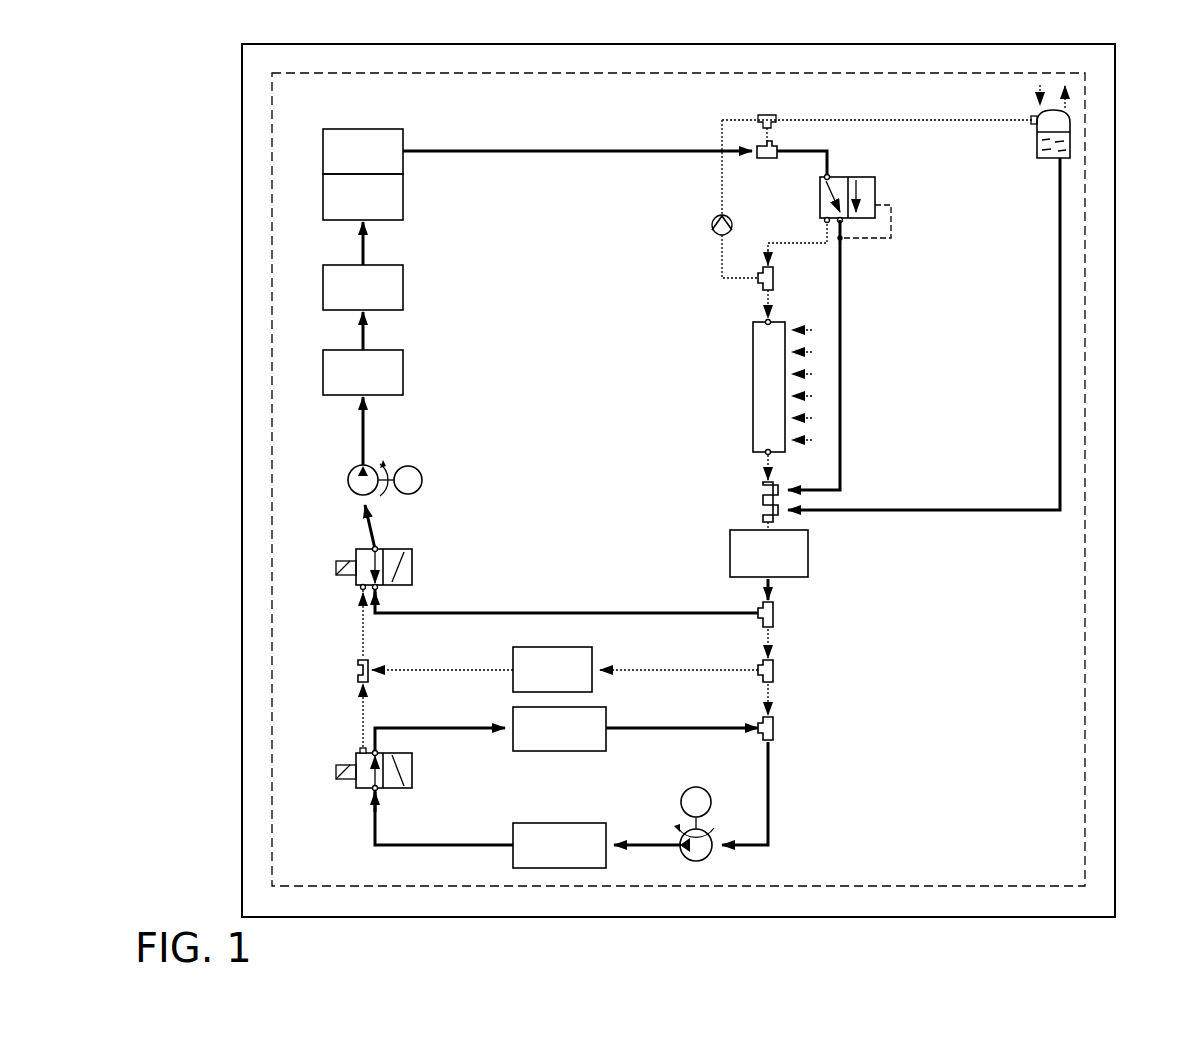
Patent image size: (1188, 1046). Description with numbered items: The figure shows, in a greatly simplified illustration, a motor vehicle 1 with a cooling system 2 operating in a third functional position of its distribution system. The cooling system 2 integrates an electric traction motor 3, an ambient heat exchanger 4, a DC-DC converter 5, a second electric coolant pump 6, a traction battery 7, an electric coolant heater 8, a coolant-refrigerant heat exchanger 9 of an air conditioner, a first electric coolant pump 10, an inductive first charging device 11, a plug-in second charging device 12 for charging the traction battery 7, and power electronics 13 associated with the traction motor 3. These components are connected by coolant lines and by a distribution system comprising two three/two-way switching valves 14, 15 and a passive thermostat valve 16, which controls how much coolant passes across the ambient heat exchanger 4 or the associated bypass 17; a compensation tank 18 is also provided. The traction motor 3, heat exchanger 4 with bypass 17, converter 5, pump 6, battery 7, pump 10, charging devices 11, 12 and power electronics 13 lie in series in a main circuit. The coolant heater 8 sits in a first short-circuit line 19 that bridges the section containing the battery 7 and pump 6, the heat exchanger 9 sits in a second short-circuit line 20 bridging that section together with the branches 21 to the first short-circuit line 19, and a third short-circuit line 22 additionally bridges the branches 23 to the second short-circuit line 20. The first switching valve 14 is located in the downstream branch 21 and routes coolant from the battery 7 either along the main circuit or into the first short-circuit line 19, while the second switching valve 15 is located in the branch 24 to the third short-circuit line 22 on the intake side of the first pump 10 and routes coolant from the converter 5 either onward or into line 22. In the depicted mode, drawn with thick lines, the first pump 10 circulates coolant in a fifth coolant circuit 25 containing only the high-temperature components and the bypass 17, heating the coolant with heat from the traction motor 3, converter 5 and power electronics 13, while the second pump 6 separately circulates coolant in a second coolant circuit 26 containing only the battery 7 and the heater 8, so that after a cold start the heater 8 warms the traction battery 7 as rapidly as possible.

The motor vehicle 1 is at (240, 240).
The cooling system 2 is at (1088, 651).
The electric traction motor 3 is at (323, 151).
The ambient heat exchanger 4 is at (753, 377).
The DC-DC converter 5 is at (808, 552).
The second electric coolant pump 6 is at (708, 855).
The traction battery 7 is at (533, 823).
The electric coolant heater 8 is at (578, 751).
The coolant-refrigerant heat exchanger 9 is at (551, 660).
The first electric coolant pump 10 is at (348, 481).
The first charging device 11 is at (323, 373).
The second charging device 12 is at (323, 286).
The power electronics 13 is at (323, 198).
The first switching valve 14 is at (357, 783).
The second switching valve 15 is at (410, 557).
The thermostat valve 16 is at (875, 190).
The bypass 17 is at (847, 372).
The compensation tank 18 is at (1037, 131).
The first short-circuit line 19 is at (659, 722).
The second short-circuit line 20 is at (473, 676).
The branches to the first short-circuit line 21 is at (778, 730).
The third short-circuit line 22 is at (631, 604).
The branches to the second short-circuit line 23 is at (778, 672).
The branch to the third short-circuit line 24 is at (778, 613).
The fifth coolant circuit 25 is at (599, 147).
The second coolant circuit 26 is at (776, 796).